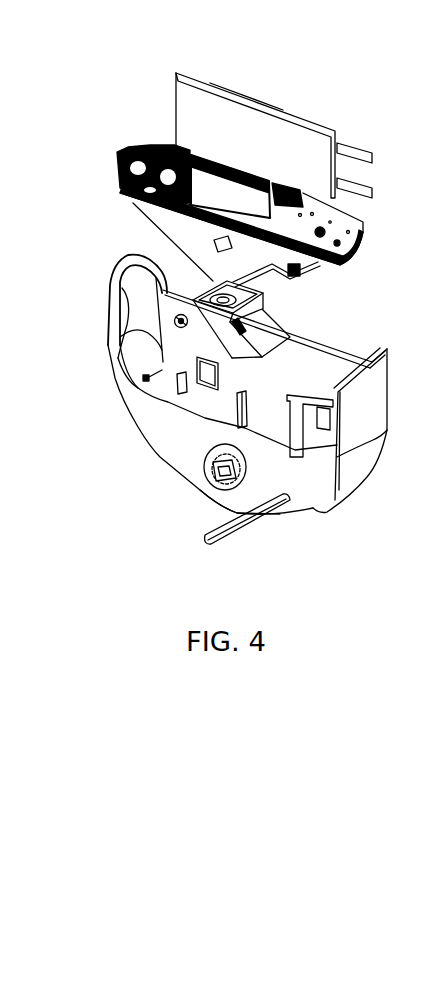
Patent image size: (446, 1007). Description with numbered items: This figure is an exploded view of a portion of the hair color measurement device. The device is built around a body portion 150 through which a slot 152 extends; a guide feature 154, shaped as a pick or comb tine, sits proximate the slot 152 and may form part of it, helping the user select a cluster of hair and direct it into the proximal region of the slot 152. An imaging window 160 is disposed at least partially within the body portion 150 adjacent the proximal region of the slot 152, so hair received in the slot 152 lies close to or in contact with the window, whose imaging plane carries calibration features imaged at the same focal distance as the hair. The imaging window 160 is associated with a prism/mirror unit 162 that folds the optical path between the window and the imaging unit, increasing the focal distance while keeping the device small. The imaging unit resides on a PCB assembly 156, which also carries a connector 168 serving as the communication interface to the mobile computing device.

The body portion 150 is at (113, 402).
The slot 152 is at (200, 517).
The guide feature 154 is at (230, 540).
The PCB assembly 156 is at (118, 162).
The imaging window 160 is at (326, 348).
The prism/mirror unit 162 is at (282, 308).
The connector 168 is at (253, 170).